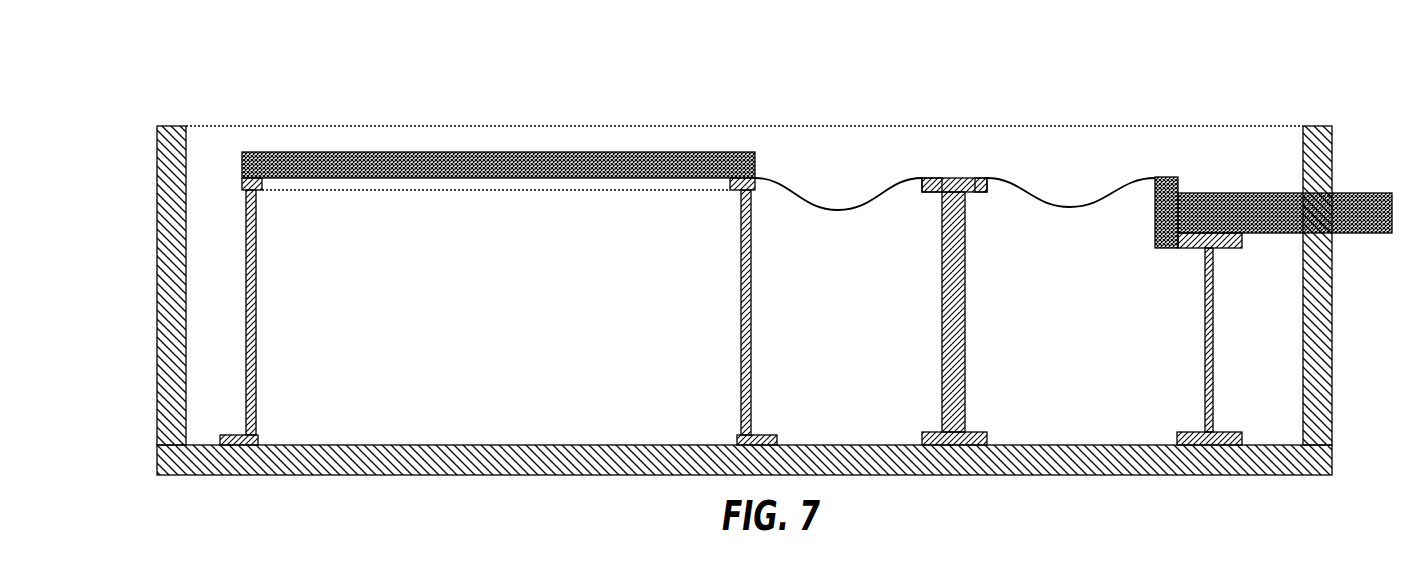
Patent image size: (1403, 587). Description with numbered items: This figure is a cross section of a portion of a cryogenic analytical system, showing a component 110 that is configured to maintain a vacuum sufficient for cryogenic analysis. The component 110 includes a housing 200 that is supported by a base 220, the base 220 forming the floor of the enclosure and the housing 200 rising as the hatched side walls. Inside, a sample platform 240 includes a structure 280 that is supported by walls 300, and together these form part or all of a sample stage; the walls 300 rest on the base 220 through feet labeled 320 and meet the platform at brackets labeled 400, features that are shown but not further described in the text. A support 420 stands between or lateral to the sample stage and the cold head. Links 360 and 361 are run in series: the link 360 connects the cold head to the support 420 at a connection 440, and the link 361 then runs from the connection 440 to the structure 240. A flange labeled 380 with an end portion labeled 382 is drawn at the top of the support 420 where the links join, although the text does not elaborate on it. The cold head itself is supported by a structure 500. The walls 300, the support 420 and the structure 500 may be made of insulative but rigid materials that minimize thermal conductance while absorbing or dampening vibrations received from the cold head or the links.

The component 110 is at (138, 88).
The housing 200 is at (160, 282).
The base 220 is at (428, 458).
The sample platform 240 is at (413, 155).
The structure 280 is at (290, 155).
The walls 300 is at (245, 323).
The column feet 320 is at (748, 440).
The link 360 is at (1070, 185).
The link 361 is at (835, 185).
The support flange 380 is at (970, 180).
The flange end 382 is at (930, 180).
The brackets 400 is at (750, 152).
The support 420 is at (945, 322).
The connection 440 is at (985, 190).
The structure 500 is at (1200, 327).